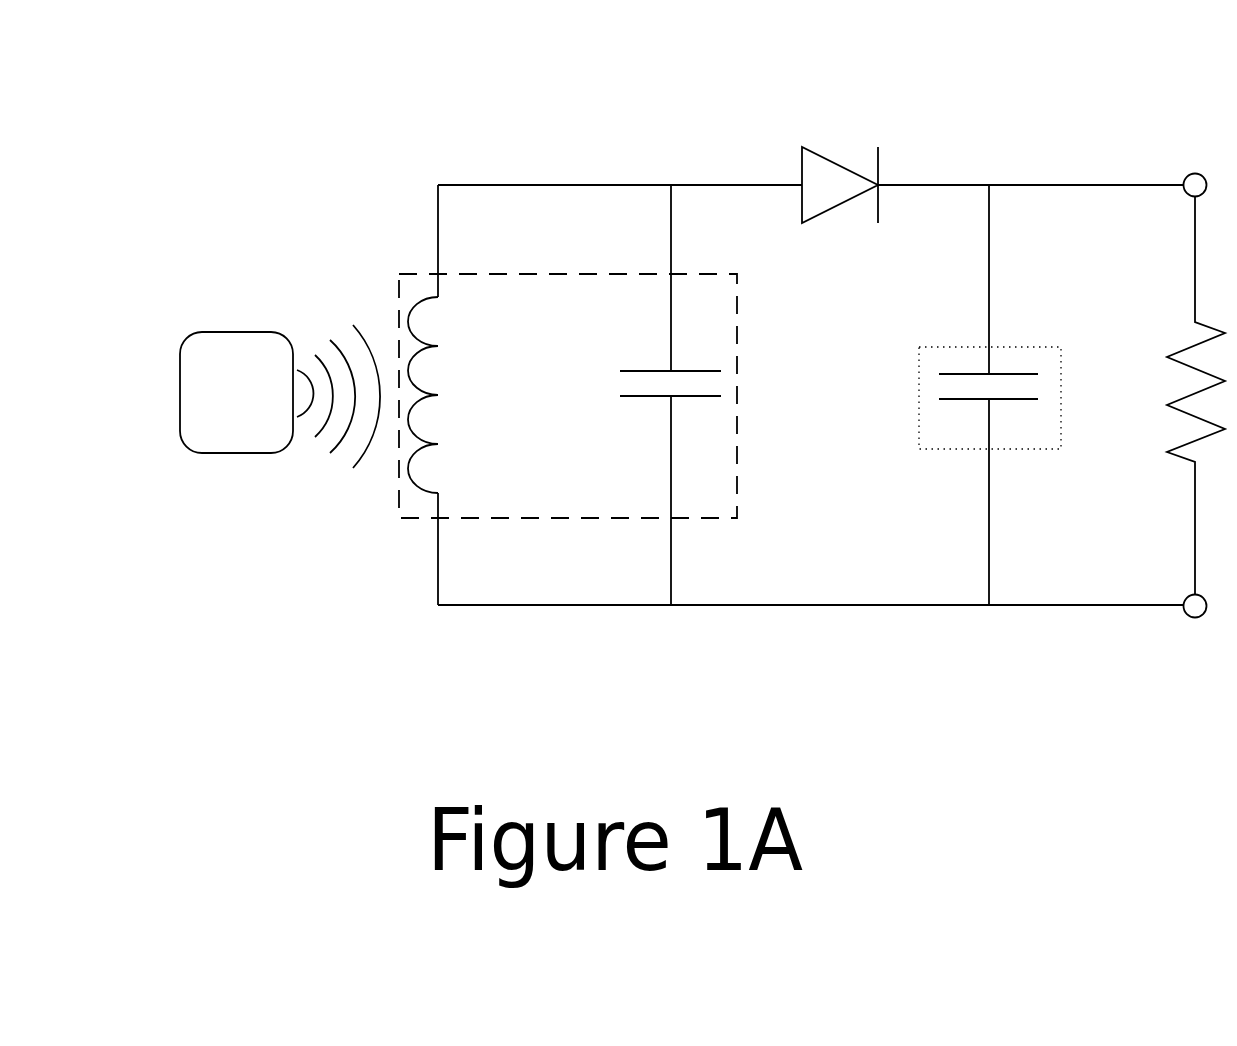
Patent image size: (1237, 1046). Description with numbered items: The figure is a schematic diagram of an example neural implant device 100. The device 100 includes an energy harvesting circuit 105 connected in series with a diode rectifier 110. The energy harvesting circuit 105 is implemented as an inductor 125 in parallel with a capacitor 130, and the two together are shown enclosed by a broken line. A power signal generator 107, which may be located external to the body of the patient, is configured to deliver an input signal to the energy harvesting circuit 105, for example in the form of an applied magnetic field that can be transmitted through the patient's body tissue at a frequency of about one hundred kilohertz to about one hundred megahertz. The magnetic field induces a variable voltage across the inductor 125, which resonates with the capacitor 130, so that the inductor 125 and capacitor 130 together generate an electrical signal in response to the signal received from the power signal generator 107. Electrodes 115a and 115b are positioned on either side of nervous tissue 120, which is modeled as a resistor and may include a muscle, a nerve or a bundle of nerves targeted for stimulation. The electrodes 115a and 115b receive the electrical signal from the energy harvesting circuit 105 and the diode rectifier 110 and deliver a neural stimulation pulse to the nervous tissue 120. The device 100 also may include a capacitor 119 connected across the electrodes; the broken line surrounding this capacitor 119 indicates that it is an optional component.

The neural implant device 100 is at (630, 56).
The energy harvesting circuit 105 is at (398, 288).
The power signal generator 107 is at (280, 396).
The diode rectifier 110 is at (840, 171).
The electrode 115a is at (1195, 172).
The electrode 115b is at (1194, 620).
The capacitor 119 is at (990, 395).
The nervous tissue 120 is at (1176, 396).
The inductor 125 is at (443, 395).
The capacitor 130 is at (670, 395).